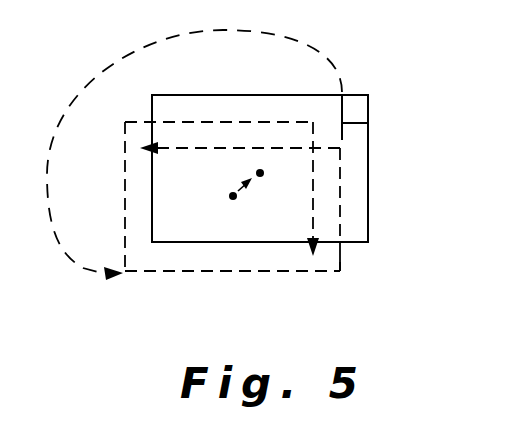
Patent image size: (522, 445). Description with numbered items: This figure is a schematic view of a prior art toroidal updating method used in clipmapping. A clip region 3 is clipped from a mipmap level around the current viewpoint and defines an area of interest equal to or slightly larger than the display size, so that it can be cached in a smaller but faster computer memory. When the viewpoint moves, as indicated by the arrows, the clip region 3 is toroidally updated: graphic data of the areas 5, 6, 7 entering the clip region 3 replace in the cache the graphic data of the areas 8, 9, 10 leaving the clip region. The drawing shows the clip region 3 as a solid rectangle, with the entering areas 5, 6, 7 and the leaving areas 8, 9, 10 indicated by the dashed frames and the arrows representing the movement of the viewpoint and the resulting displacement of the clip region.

The clip region 3 is at (368, 152).
The area entering the clip region 5 is at (260, 108).
The area entering the clip region 6 is at (360, 112).
The area entering the clip region 7 is at (353, 203).
The area leaving the clip region 8 is at (247, 257).
The area leaving the clip region 9 is at (140, 260).
The area leaving the clip region 10 is at (140, 200).